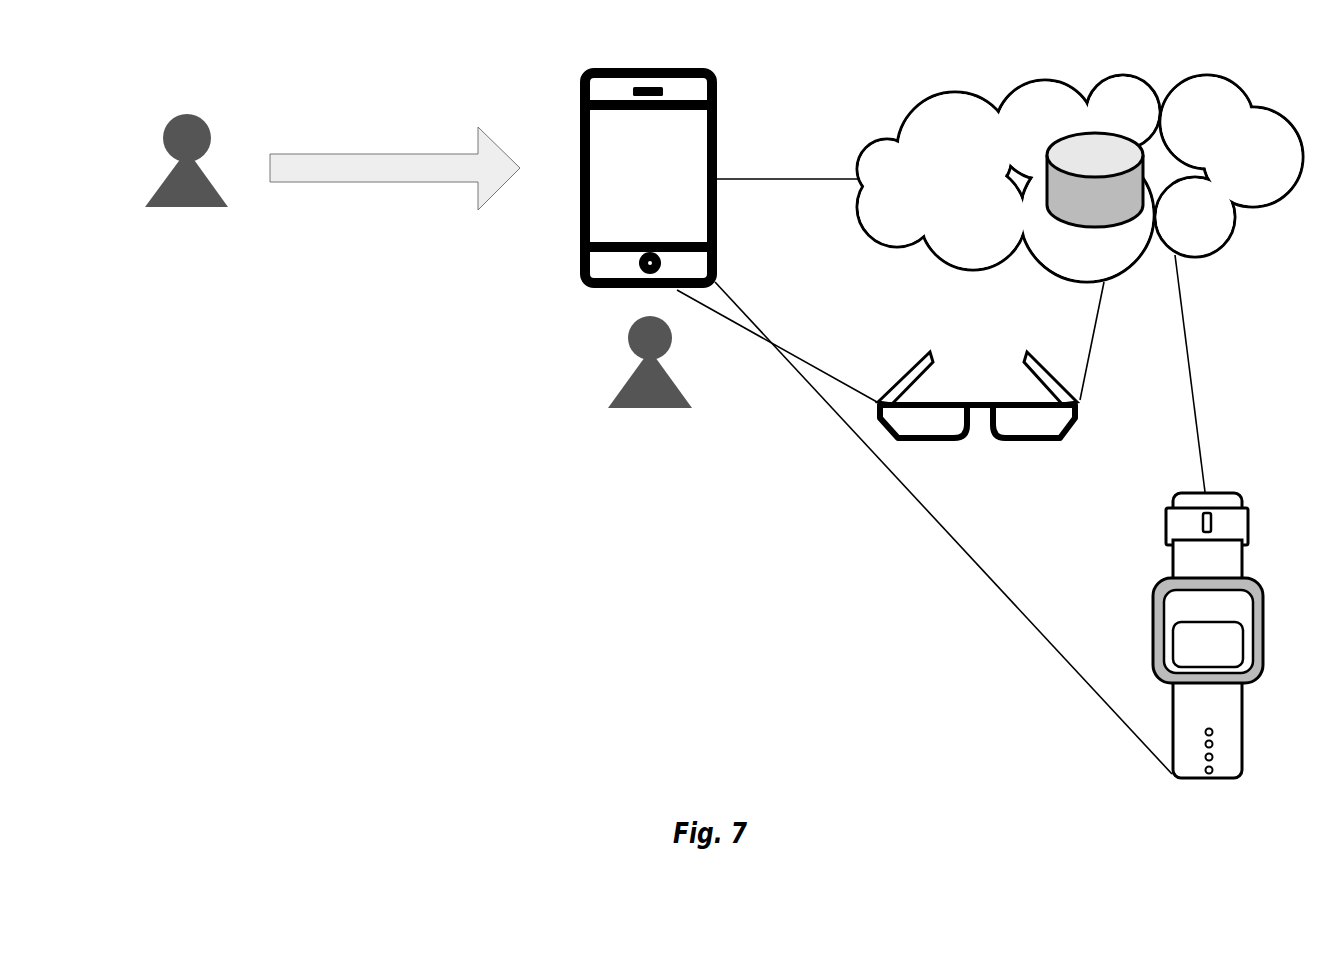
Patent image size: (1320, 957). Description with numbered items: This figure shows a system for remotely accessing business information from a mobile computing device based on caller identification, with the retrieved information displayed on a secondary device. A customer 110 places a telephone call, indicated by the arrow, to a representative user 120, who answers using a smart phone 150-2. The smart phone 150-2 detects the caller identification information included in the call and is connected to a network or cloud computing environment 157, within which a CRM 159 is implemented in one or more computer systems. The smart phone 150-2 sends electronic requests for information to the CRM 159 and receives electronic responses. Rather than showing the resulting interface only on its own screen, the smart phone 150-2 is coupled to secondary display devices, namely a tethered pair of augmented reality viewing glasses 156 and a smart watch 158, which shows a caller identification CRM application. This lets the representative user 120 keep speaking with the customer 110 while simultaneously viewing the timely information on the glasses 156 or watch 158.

The customer 110 is at (176, 120).
The representative user 120 is at (630, 322).
The smart phone 150-2 is at (583, 71).
The augmented reality viewing glasses 156 is at (922, 357).
The cloud computing environment 157 is at (950, 92).
The smart watch 158 is at (1178, 493).
The customer relationship management system (CRM) 159 is at (1048, 165).